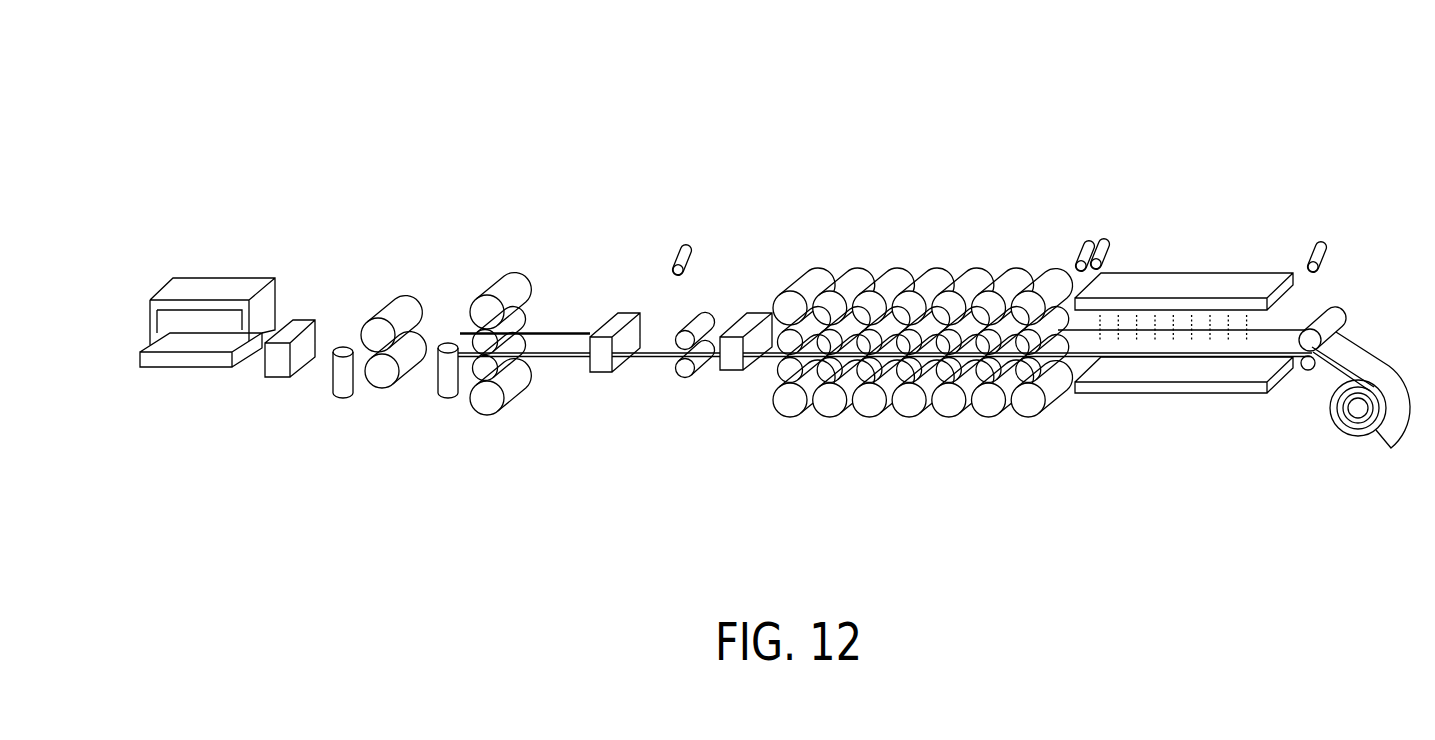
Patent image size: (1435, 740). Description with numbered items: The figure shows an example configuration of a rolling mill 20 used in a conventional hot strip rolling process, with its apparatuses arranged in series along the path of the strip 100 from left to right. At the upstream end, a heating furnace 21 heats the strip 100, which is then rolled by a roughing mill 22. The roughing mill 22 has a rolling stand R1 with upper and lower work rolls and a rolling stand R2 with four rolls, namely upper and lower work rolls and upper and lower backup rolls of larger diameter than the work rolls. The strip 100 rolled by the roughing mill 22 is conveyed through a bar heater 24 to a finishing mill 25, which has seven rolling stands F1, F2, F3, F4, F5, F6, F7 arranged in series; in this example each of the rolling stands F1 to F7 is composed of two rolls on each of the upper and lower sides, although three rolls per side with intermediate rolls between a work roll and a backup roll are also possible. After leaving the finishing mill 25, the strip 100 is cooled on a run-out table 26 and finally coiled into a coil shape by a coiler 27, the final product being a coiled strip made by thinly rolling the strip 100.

The rolling mill 20 is at (648, 126).
The heating furnace 21 is at (205, 290).
The roughing mill 22 is at (480, 193).
The rolling stand R1 is at (393, 303).
The rolling stand R2 is at (493, 290).
The strip 100 is at (178, 337).
The bar heater 24 is at (620, 315).
The finishing mill 25 is at (1077, 177).
The rolling stand F1 is at (812, 279).
The rolling stand F2 is at (851, 291).
The rolling stand F3 is at (897, 292).
The rolling stand F4 is at (923, 291).
The rolling stand F5 is at (966, 291).
The rolling stand F6 is at (1004, 291).
The rolling stand F7 is at (1040, 291).
The run-out table 26 is at (1174, 393).
The coiler 27 is at (1331, 418).